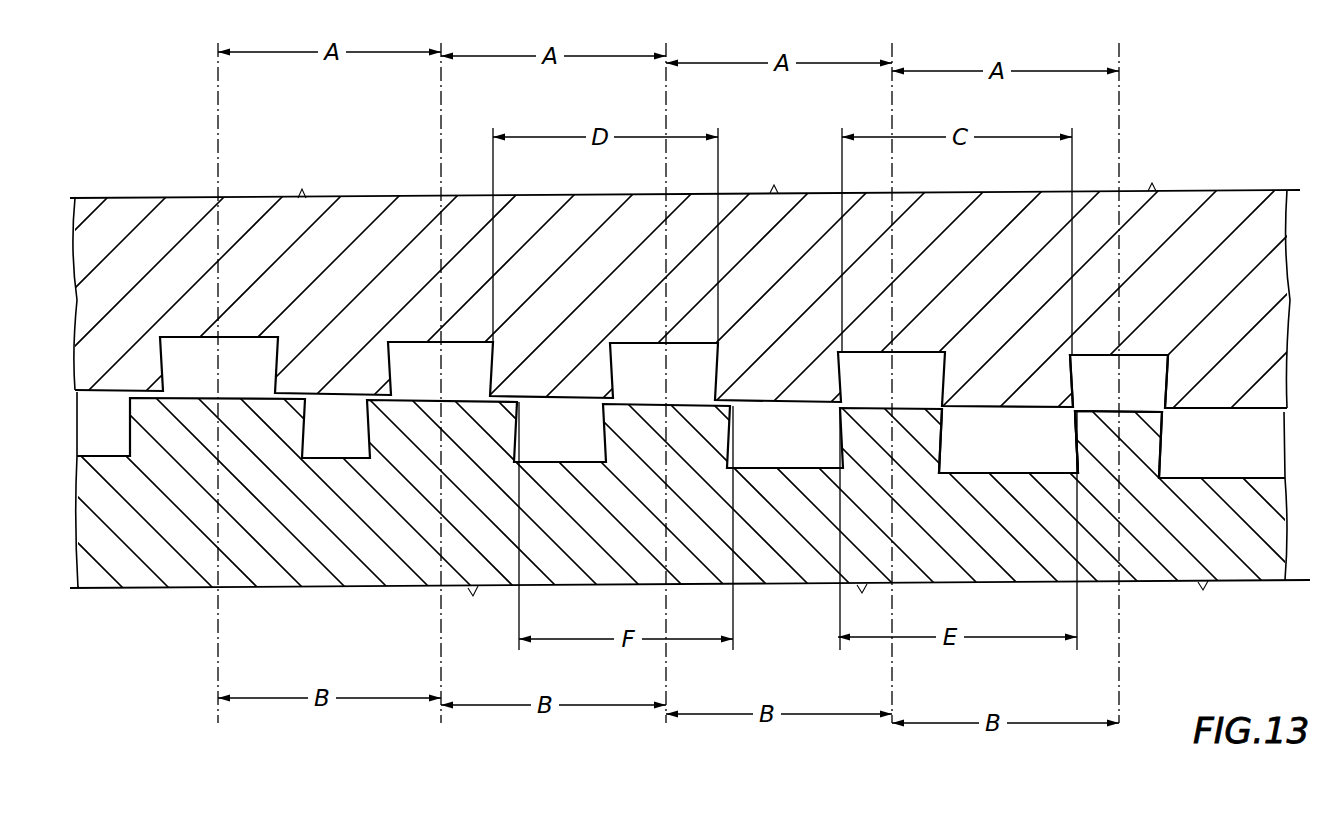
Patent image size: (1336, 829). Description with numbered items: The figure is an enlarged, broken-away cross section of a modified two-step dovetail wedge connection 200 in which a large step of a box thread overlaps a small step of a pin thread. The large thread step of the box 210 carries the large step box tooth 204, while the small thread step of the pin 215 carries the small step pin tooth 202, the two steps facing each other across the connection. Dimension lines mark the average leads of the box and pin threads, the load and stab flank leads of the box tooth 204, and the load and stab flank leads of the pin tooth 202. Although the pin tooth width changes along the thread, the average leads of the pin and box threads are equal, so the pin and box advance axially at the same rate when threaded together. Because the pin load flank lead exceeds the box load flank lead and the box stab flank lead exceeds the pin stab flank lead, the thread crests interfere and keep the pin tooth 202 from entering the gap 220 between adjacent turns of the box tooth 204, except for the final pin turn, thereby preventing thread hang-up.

The two-step dovetail wedge connection 200 is at (668, 387).
The large thread step of the box 210 is at (668, 270).
The gap 220 is at (1145, 355).
The small step pin tooth 202 is at (1148, 447).
The large step box tooth 204 is at (992, 398).
The small thread step of the pin 215 is at (668, 518).